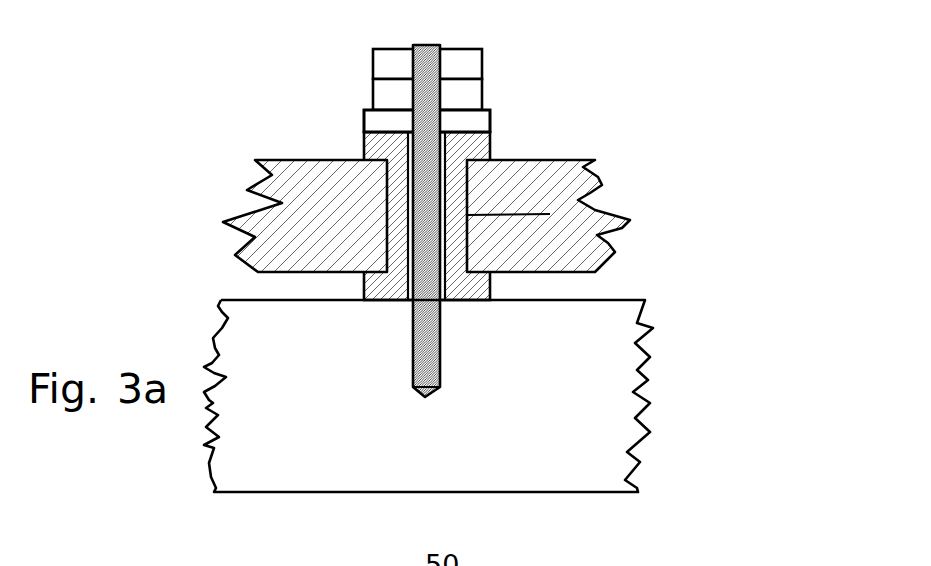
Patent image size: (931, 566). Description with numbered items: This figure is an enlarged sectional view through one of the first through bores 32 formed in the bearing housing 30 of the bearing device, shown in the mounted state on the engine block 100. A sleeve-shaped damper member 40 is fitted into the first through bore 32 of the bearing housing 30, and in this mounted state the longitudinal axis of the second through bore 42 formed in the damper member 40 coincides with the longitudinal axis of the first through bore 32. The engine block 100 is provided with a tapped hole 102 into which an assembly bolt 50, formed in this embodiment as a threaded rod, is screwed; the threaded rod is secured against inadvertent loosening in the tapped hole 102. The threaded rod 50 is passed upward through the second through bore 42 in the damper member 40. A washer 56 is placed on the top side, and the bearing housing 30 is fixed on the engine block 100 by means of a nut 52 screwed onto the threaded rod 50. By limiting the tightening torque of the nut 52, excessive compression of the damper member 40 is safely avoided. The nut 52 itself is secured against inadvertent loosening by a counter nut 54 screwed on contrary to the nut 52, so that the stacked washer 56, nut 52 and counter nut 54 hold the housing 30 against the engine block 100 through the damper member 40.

The bearing housing 30 is at (565, 235).
The first through bore 32 is at (550, 214).
The sleeve-shaped damper member 40 is at (470, 147).
The second through bore 42 is at (400, 153).
The assembly bolt 50 is at (427, 63).
The nut 52 is at (387, 88).
The counter nut 54 is at (387, 59).
The washer 56 is at (373, 117).
The engine block 100 is at (598, 389).
The tapped hole 102 is at (425, 397).